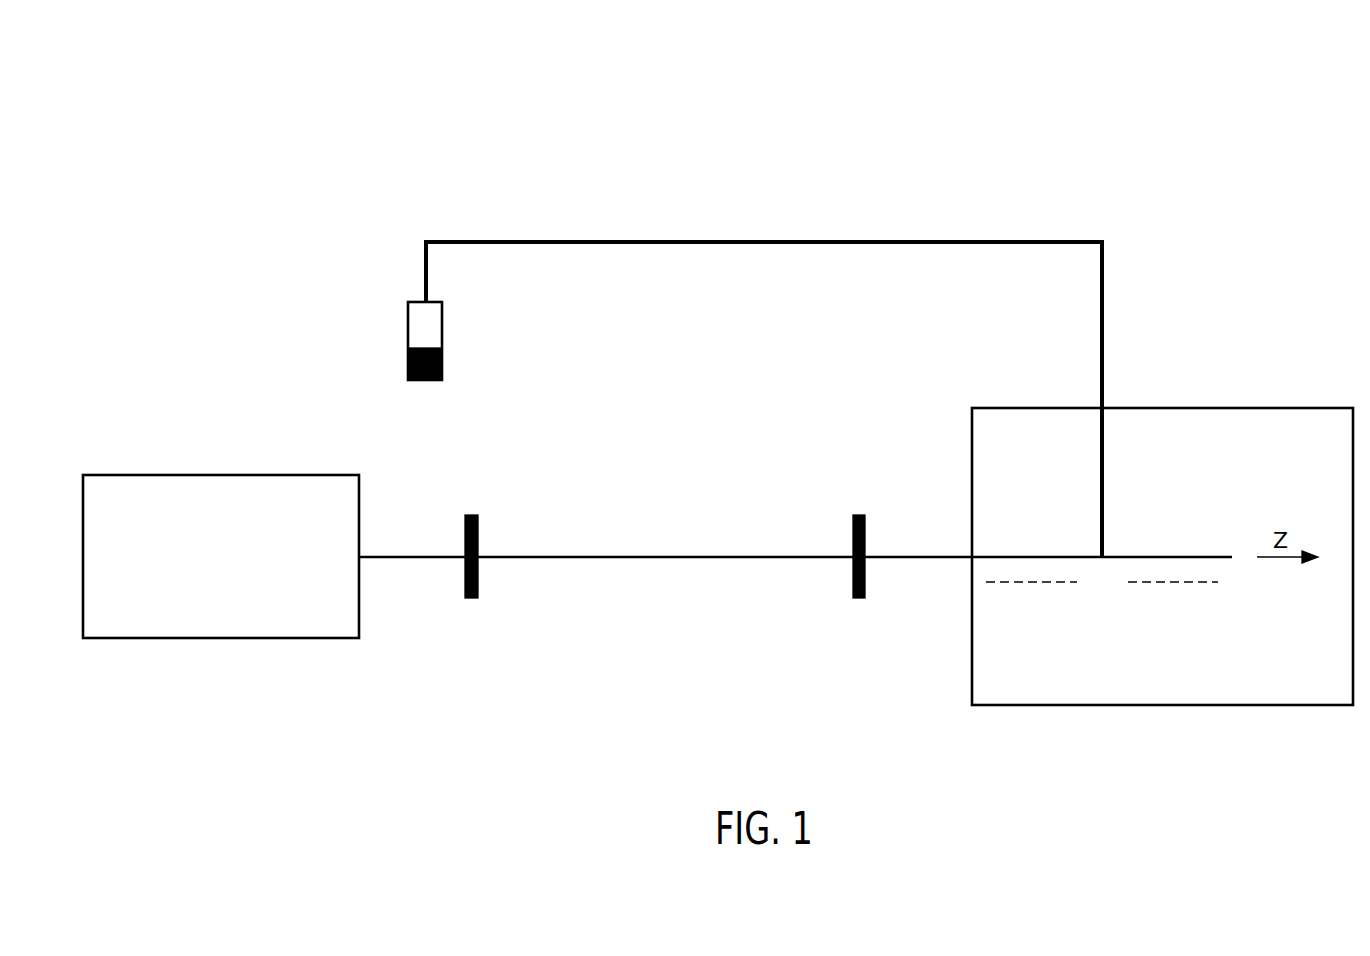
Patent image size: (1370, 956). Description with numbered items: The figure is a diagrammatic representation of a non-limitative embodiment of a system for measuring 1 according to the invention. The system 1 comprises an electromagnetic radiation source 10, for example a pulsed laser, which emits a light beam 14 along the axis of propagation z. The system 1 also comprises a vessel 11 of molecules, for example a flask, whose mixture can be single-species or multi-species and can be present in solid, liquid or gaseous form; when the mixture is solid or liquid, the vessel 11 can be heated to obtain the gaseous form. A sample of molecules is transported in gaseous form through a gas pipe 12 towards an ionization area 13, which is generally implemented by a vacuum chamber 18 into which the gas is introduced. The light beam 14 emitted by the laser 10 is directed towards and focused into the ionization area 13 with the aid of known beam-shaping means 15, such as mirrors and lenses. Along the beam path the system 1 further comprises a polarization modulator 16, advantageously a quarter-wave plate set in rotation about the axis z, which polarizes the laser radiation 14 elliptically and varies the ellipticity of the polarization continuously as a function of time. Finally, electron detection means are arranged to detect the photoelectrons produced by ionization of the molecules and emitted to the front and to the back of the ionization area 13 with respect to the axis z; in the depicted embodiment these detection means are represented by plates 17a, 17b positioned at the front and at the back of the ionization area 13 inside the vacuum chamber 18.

The system for measuring 1 is at (790, 132).
The electromagnetic radiation source 10 is at (162, 474).
The vessel of molecules 11 is at (408, 362).
The gas pipe 12 is at (890, 240).
The ionization area 13 is at (1148, 515).
The light beam 14 is at (413, 553).
The beam-shaping means 15 is at (857, 599).
The polarization modulator 16 is at (470, 599).
The plate 17a is at (1036, 584).
The plate 17b is at (1196, 584).
The vacuum chamber 18 is at (1280, 407).